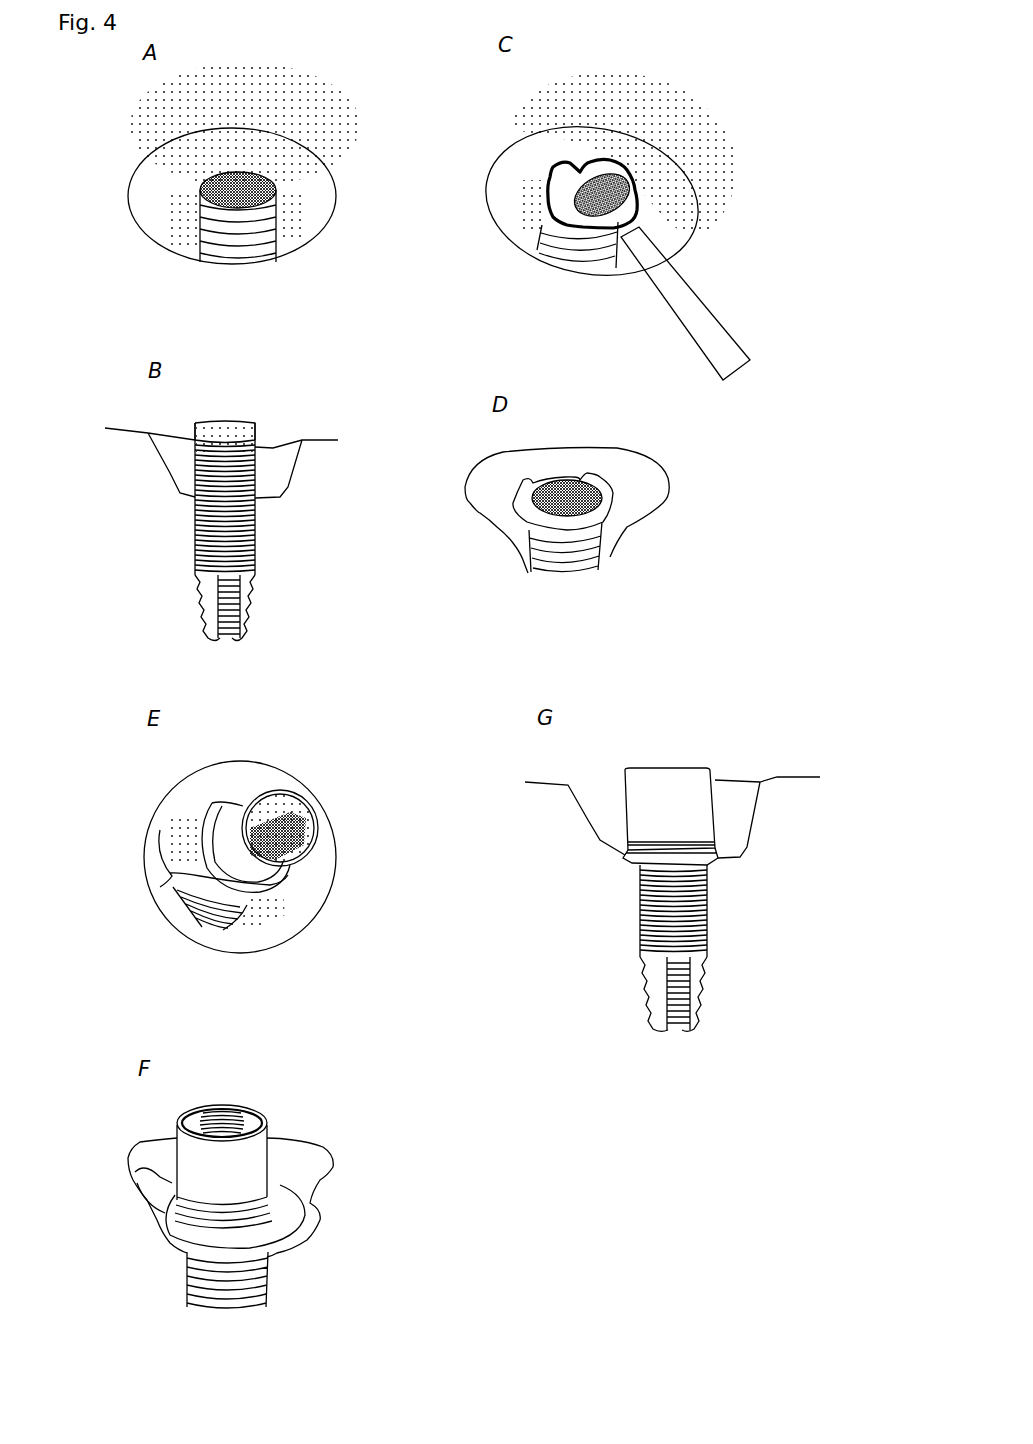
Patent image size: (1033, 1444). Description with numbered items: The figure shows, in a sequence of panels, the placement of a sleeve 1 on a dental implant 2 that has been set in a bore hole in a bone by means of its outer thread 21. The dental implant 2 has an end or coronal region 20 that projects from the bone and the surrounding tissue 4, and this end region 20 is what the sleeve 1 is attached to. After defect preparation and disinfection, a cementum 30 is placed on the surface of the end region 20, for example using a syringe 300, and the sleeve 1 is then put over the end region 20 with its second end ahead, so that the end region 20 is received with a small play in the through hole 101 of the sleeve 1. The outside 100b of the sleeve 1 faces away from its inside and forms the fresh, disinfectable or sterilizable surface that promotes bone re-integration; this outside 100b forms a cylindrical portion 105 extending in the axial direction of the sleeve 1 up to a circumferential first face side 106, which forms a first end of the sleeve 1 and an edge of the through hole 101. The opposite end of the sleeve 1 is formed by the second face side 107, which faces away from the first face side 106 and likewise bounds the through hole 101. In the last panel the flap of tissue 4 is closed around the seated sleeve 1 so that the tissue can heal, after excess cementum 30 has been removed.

The sleeve 1 is at (305, 788).
The dental implant 2 is at (240, 158).
The gingiva / bone tissue 4 is at (147, 197).
The end region 20 is at (257, 213).
The outer thread 21 is at (240, 530).
The cementum 30 is at (623, 178).
The syringe 300 is at (717, 318).
The through hole 101 is at (243, 1120).
The cylindrical portion 105 is at (235, 843).
The first face side 106 is at (270, 790).
The outside 100b is at (657, 810).
The second face side 107 is at (657, 867).